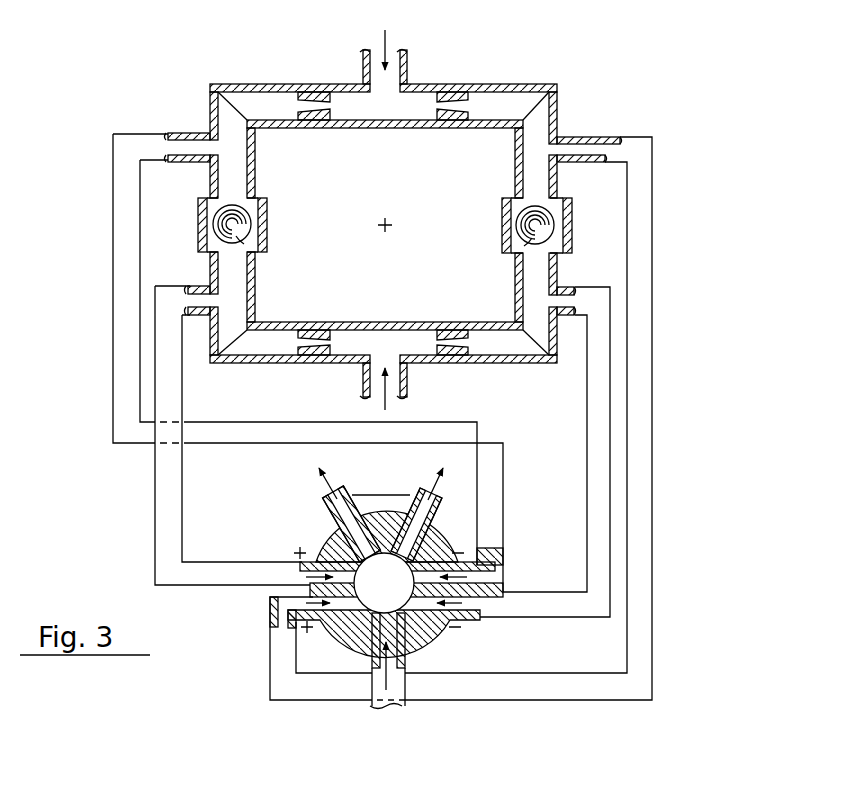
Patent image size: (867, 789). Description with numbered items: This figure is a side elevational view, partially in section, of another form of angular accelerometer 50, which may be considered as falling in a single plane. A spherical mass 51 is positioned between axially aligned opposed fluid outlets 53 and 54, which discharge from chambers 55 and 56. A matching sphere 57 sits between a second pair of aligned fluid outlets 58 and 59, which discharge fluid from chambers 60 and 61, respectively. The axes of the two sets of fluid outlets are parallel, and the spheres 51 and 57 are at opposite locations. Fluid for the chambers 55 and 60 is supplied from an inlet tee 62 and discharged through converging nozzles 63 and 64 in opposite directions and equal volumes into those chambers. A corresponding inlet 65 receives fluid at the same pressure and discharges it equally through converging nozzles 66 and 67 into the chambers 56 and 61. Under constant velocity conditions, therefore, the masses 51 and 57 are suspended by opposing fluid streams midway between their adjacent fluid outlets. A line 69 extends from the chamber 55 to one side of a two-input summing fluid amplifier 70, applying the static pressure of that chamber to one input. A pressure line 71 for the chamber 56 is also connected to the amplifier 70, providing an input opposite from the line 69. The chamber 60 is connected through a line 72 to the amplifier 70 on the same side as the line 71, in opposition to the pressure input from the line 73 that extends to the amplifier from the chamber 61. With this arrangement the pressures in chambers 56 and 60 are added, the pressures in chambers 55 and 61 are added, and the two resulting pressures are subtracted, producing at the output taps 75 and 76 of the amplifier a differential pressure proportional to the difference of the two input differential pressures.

The angular accelerometer 50 is at (672, 165).
The spherical mass 51 is at (220, 216).
The fluid outlet 53 is at (264, 210).
The fluid outlet 54 is at (245, 244).
The chamber 55 is at (232, 138).
The chamber 56 is at (235, 265).
The sphere 57 is at (545, 228).
The fluid outlet 58 is at (530, 200).
The fluid outlet 59 is at (525, 232).
The chamber 60 is at (535, 172).
The chamber 61 is at (537, 283).
The inlet tee 62 is at (406, 47).
The converging nozzle 63 is at (306, 102).
The converging nozzle 64 is at (452, 104).
The inlet 65 is at (410, 380).
The converging nozzle 66 is at (314, 330).
The converging nozzle 67 is at (450, 328).
The line 69 is at (112, 196).
The two-input summing fluid amplifier 70 is at (325, 535).
The pressure line 71 is at (168, 497).
The line 72 is at (640, 307).
The line 73 is at (592, 378).
The output tap 75 is at (323, 497).
The output tap 76 is at (414, 490).